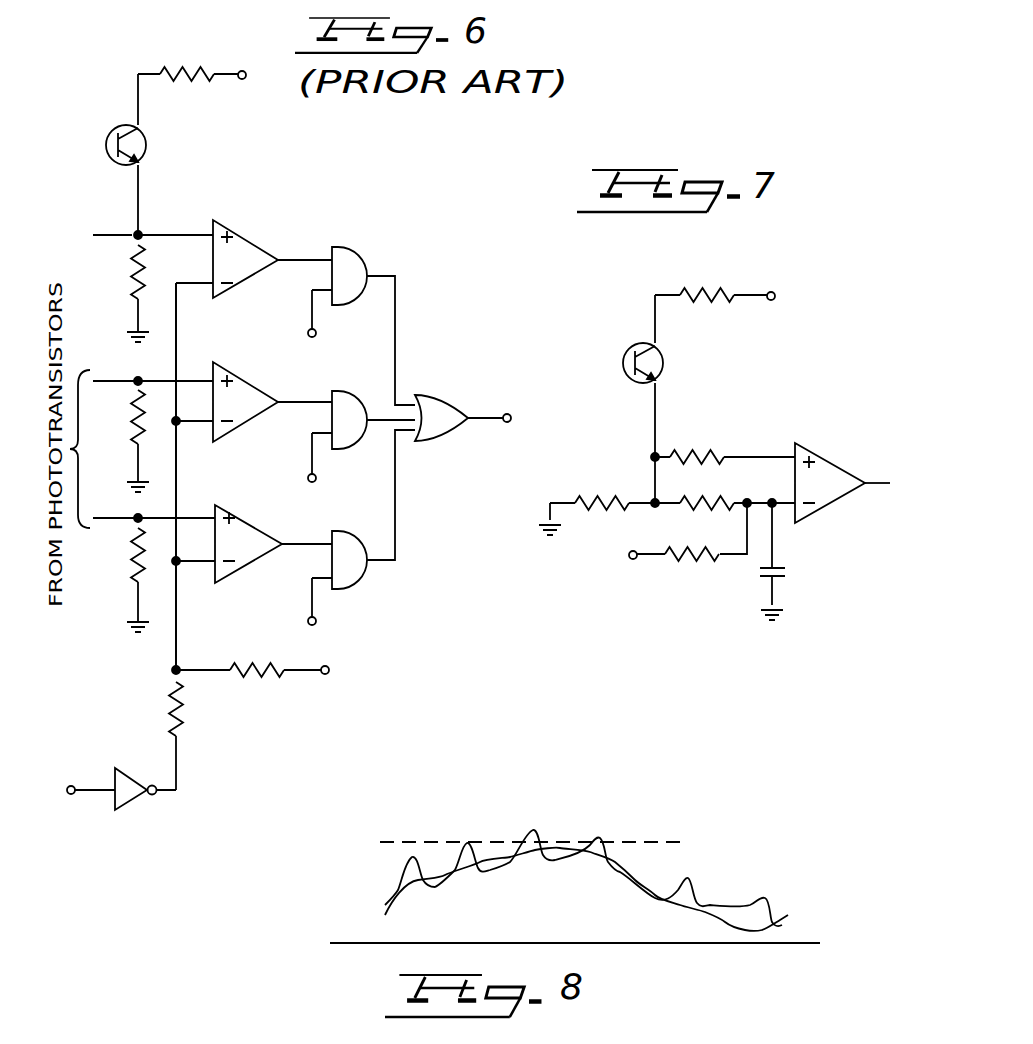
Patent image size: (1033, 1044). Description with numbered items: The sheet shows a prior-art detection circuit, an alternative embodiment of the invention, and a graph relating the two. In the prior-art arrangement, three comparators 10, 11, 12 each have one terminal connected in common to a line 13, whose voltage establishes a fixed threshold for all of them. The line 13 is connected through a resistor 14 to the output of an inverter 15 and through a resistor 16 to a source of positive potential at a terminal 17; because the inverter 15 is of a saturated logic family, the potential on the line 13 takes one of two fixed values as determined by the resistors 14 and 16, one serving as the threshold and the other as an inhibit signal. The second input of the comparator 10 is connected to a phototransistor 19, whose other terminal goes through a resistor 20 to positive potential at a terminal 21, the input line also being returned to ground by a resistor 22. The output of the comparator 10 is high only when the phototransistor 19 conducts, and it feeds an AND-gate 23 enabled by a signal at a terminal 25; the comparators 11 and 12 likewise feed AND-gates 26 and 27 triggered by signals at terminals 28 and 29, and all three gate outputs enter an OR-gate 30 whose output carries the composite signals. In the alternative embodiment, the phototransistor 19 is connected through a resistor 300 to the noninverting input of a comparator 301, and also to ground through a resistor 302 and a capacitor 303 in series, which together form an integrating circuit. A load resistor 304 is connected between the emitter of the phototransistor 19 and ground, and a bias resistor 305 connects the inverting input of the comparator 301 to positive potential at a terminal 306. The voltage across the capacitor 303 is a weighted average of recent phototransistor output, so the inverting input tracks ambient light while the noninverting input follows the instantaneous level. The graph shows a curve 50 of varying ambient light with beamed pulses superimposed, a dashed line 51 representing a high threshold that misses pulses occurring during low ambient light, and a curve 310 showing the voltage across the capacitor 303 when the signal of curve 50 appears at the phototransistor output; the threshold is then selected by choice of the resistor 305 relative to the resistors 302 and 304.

In FIG. 6, the comparator 10 is at (265, 218).
In FIG. 6, the comparator 11 is at (252, 396).
In FIG. 6, the comparator 12 is at (272, 518).
In FIG. 6, the line 13 is at (178, 618).
In FIG. 6, the resistor 14 is at (170, 693).
In FIG. 6, the inverter 15 is at (150, 764).
In FIG. 6, the resistor 16 is at (270, 677).
In FIG. 6, the terminal 17 is at (323, 675).
In FIG. 6, the phototransistor 19 is at (148, 146).
In FIG. 7, the phototransistor 19 is at (662, 370).
In FIG. 6, the resistor 20 is at (214, 67).
In FIG. 7, the resistor 20 is at (725, 292).
In FIG. 6, the terminal 21 is at (243, 82).
In FIG. 7, the terminal 21 is at (767, 291).
In FIG. 6, the resistor 22 is at (130, 275).
In FIG. 6, the AND-gate 23 is at (372, 250).
In FIG. 6, the terminal 25 is at (320, 333).
In FIG. 6, the AND-gate 26 is at (362, 389).
In FIG. 6, the AND-gate 27 is at (362, 526).
In FIG. 6, the terminal 28 is at (322, 478).
In FIG. 6, the terminal 29 is at (318, 620).
In FIG. 6, the OR-gate 30 is at (468, 379).
In FIG. 7, the resistor 300 is at (718, 453).
In FIG. 7, the comparator 301 is at (862, 441).
In FIG. 7, the resistor 302 is at (728, 509).
In FIG. 7, the capacitor 303 is at (782, 566).
In FIG. 7, the load resistor 304 is at (626, 486).
In FIG. 7, the bias resistor 305 is at (685, 559).
In FIG. 7, the terminal 306 is at (633, 564).
In FIG. 8, the curve 50 is at (393, 896).
In FIG. 8, the dashed line 51 is at (412, 840).
In FIG. 8, the curve 310 is at (415, 893).